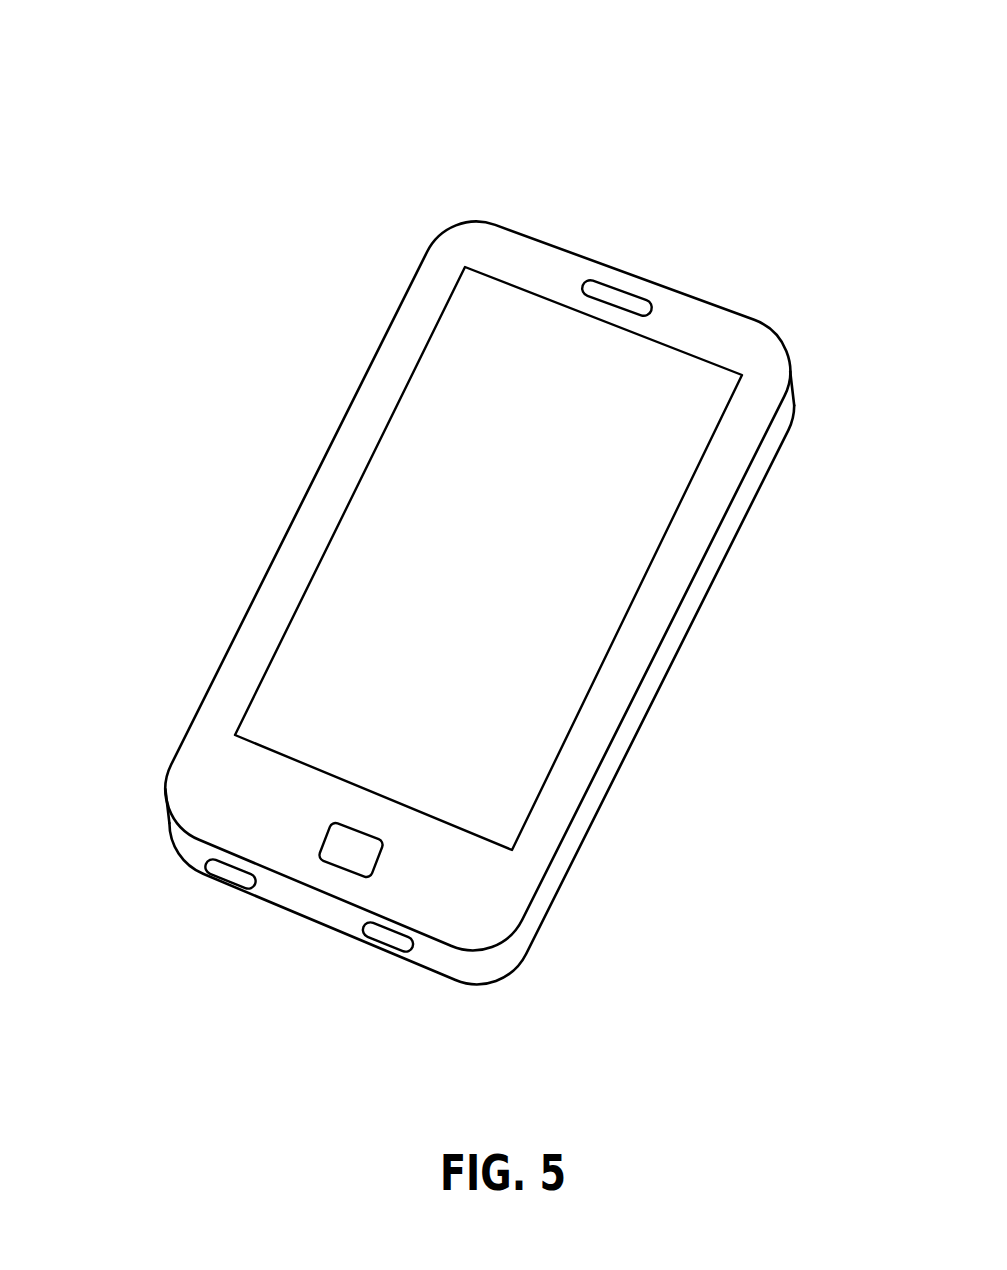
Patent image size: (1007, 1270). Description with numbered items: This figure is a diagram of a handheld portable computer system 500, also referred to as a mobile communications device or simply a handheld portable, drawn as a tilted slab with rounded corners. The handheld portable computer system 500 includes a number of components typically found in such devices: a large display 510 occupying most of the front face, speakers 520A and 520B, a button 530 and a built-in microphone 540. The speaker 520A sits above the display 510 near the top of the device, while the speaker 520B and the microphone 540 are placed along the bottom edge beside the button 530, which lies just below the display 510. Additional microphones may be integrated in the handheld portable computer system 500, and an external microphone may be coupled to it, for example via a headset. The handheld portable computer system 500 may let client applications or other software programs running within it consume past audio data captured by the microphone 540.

The handheld portable computer system 500 is at (243, 140).
The display 510 is at (457, 380).
The speaker 520A is at (627, 292).
The speaker 520B is at (228, 873).
The button 530 is at (383, 862).
The microphone 540 is at (385, 935).